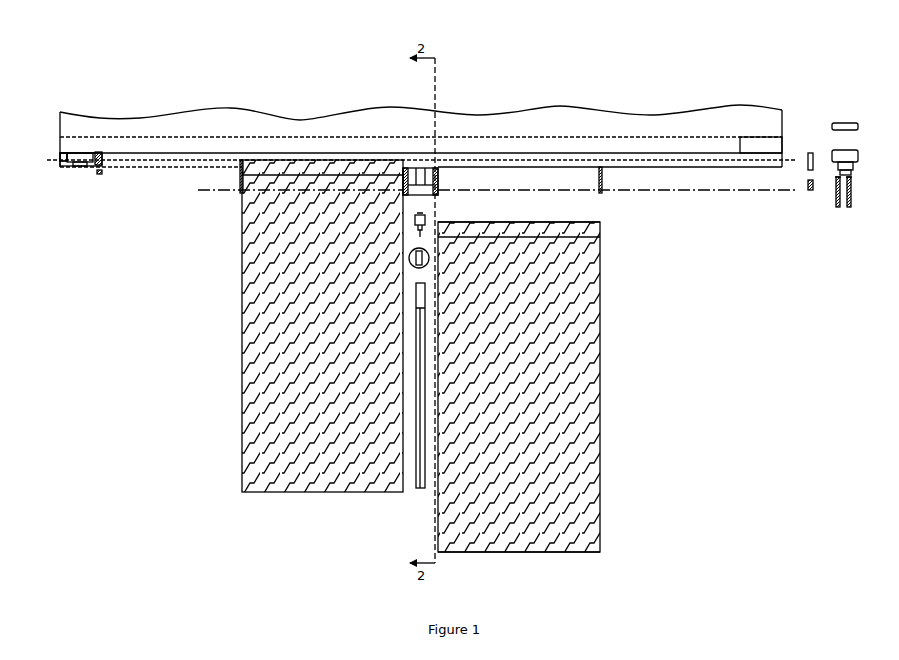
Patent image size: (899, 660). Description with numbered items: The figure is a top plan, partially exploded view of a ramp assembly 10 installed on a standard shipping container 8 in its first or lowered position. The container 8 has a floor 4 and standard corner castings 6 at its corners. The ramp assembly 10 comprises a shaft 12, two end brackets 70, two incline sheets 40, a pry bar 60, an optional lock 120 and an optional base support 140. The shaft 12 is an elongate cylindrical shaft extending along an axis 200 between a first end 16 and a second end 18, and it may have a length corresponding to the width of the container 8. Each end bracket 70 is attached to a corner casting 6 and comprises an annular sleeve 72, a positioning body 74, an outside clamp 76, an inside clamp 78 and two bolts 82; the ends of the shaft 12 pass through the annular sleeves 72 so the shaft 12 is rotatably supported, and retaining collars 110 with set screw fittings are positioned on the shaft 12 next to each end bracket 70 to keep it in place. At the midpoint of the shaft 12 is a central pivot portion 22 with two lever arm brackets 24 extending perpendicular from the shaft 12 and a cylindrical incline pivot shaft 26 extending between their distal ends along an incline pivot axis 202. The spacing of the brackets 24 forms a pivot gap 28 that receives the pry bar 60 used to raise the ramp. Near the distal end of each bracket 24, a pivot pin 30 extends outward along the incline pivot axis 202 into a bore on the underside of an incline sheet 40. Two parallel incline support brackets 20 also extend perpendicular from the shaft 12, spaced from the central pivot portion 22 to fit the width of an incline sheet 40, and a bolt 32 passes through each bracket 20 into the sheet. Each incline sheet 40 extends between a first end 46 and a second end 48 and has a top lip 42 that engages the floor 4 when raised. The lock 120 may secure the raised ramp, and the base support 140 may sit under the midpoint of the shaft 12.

The ramp assembly 10 is at (762, 62).
The floor 4 is at (632, 124).
The corner casting 6 is at (777, 143).
The shipping container 8 is at (782, 124).
The shaft 12 is at (192, 168).
The first end 16 is at (53, 163).
The second end 18 is at (792, 152).
The incline support bracket 20 is at (238, 185).
The central pivot portion 22 is at (450, 182).
The lever arm bracket 24 is at (416, 168).
The incline pivot shaft 26 is at (422, 186).
The pivot gap 28 is at (430, 177).
The pivot pin 30 is at (500, 190).
The bolt 32 is at (241, 196).
The incline sheet 40 is at (242, 452).
The top lip 42 is at (600, 230).
The first end 46 is at (586, 214).
The second end 48 is at (586, 558).
The pry bar 60 is at (416, 467).
The end bracket 70 is at (84, 175).
The annular sleeve 72 is at (78, 168).
The positioning body 74 is at (858, 153).
The outside clamp 76 is at (60, 157).
The inside clamp 78 is at (858, 127).
The bolt 82 is at (852, 198).
The retaining collar 110 is at (100, 176).
The lock 120 is at (413, 218).
The base support 140 is at (408, 258).
The axis 200 is at (567, 173).
The incline pivot axis 202 is at (533, 190).